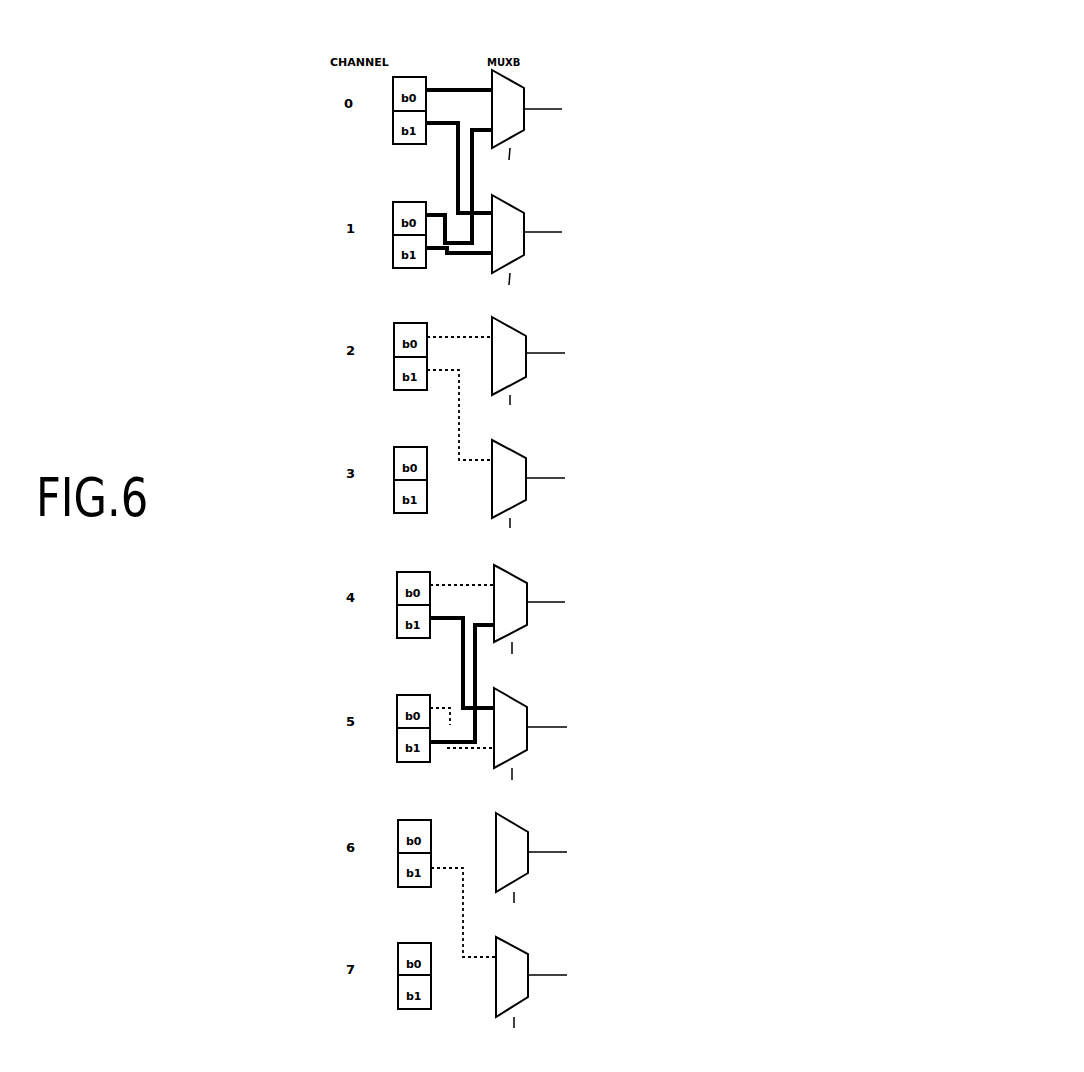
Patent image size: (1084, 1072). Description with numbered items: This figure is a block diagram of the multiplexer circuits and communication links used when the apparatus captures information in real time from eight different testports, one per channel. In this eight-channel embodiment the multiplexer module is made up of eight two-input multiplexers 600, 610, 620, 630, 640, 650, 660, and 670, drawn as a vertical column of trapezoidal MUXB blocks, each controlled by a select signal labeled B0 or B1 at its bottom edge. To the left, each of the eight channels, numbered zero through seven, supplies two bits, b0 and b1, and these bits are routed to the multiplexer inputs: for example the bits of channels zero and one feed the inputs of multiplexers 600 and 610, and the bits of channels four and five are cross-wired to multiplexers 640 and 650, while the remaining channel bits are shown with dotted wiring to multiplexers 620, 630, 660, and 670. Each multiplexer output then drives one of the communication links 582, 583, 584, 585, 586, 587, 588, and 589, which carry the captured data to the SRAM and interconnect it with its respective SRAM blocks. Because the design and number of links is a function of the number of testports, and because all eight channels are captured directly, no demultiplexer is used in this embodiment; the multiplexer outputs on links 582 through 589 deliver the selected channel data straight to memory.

The multiplexer 600 is at (528, 97).
The multiplexer 610 is at (530, 221).
The multiplexer 620 is at (530, 348).
The multiplexer 630 is at (530, 470).
The multiplexer 640 is at (535, 593).
The multiplexer 650 is at (530, 722).
The multiplexer 660 is at (530, 843).
The multiplexer 670 is at (530, 967).
The communication link 582 is at (552, 114).
The communication link 583 is at (552, 238).
The communication link 584 is at (552, 357).
The communication link 585 is at (555, 483).
The communication link 586 is at (557, 607).
The communication link 587 is at (557, 730).
The communication link 588 is at (557, 856).
The communication link 589 is at (557, 978).